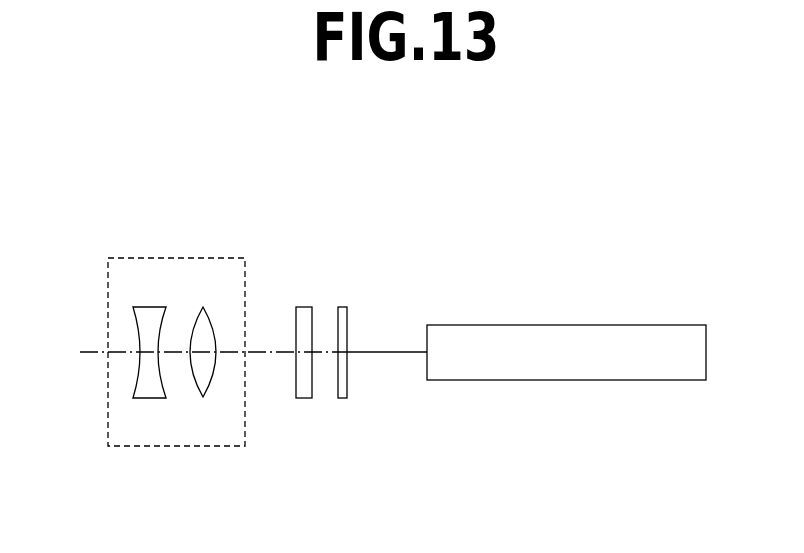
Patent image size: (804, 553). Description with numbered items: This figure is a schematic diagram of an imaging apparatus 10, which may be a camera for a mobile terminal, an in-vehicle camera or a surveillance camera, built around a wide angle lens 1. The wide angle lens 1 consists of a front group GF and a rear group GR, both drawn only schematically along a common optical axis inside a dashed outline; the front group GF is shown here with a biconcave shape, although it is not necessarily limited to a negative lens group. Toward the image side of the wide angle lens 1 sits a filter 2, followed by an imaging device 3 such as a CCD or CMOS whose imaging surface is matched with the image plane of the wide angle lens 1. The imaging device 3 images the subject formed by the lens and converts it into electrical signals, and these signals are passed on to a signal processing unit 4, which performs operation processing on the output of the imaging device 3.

The imaging apparatus 10 is at (311, 201).
The wide angle lens 1 is at (176, 257).
The front group GF is at (150, 399).
The rear group GR is at (203, 398).
The filter 2 is at (303, 307).
The imaging device 3 is at (343, 307).
The signal processing unit 4 is at (690, 325).